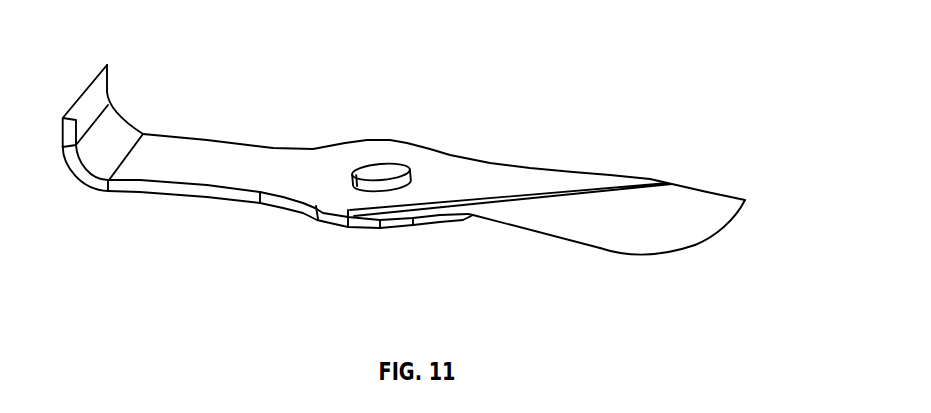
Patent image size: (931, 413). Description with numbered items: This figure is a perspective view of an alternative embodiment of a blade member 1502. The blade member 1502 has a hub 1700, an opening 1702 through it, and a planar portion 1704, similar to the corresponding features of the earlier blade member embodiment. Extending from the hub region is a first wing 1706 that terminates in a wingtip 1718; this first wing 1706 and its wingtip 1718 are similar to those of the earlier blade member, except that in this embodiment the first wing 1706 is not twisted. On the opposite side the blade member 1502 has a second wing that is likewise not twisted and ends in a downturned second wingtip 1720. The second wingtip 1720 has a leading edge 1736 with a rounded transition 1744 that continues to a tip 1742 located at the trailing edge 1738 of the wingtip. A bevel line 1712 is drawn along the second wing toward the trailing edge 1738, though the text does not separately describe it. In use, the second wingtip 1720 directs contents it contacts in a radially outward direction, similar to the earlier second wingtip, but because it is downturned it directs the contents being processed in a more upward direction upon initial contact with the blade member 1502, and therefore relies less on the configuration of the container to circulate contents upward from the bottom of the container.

The hub 1700 is at (443, 172).
The blade member 1502 is at (207, 140).
The opening 1702 is at (377, 170).
The planar portion 1704 is at (325, 213).
The first wing 1706 is at (157, 172).
The bevel edge 1712 is at (558, 177).
The wingtip 1718 is at (107, 91).
The second wingtip 1720 is at (725, 224).
The leading edge 1736 is at (562, 238).
The trailing edge 1738 is at (710, 192).
The tip 1742 is at (745, 200).
The rounded transition 1744 is at (695, 246).